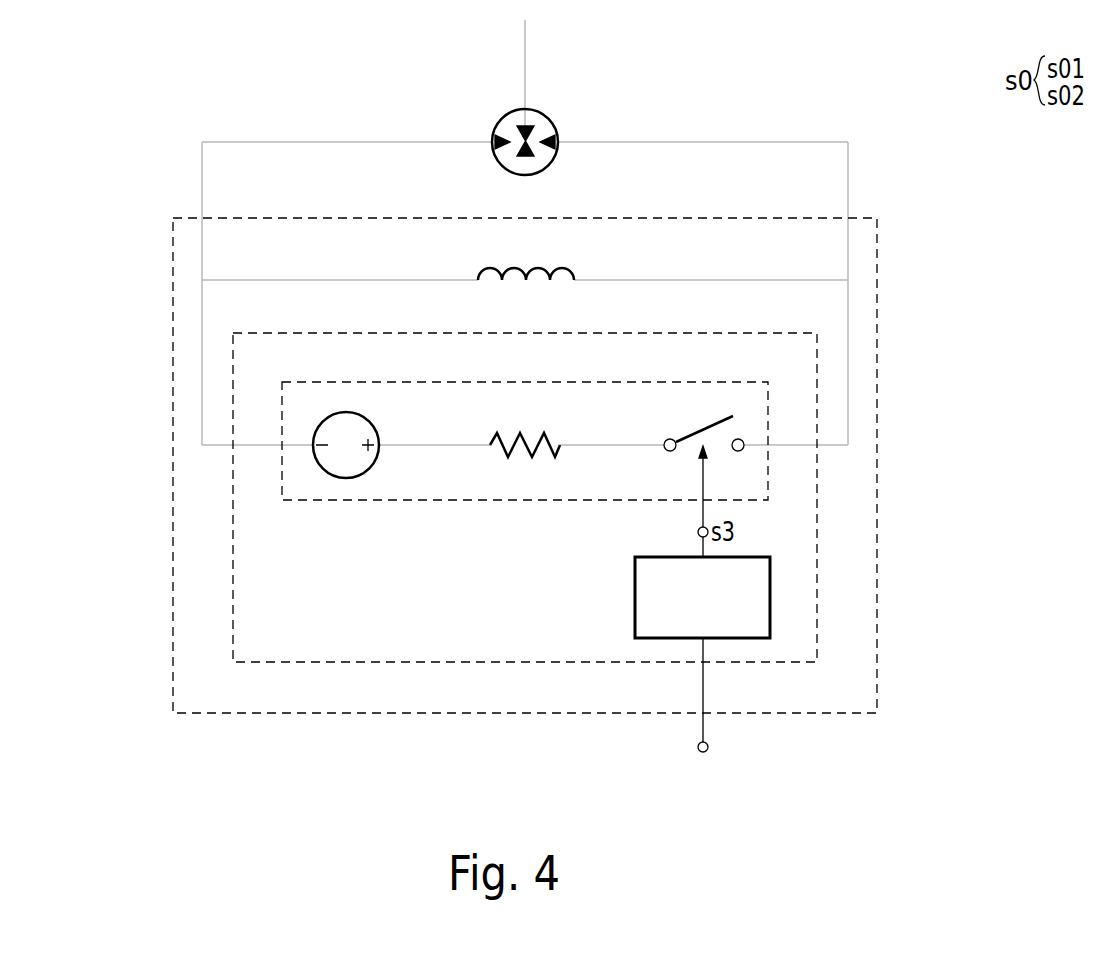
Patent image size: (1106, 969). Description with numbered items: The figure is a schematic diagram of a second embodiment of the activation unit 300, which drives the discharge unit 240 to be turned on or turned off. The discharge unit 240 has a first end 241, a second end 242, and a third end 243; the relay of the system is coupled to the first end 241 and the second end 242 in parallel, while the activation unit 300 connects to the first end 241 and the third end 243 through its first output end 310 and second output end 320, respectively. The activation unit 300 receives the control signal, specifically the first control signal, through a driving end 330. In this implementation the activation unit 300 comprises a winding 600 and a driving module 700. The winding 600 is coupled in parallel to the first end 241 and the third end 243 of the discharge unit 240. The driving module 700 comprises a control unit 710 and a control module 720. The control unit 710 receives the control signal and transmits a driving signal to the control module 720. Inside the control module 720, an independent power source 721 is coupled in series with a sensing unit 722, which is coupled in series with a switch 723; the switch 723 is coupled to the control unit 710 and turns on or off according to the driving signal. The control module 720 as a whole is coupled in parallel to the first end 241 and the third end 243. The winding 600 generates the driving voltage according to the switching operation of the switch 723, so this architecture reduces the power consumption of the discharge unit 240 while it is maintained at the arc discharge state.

The discharge unit 240 is at (503, 165).
The first end 241 is at (562, 135).
The second end 242 is at (528, 106).
The third end 243 is at (488, 135).
The first output end 310 is at (850, 190).
The second output end 320 is at (202, 190).
The activation unit 300 is at (172, 412).
The driving end 330 is at (708, 747).
The winding 600 is at (535, 283).
The driving module 700 is at (322, 332).
The control unit 710 is at (633, 598).
The control module 720 is at (322, 382).
The independent power source 721 is at (372, 425).
The sensing unit 722 is at (530, 455).
The switch 723 is at (683, 432).